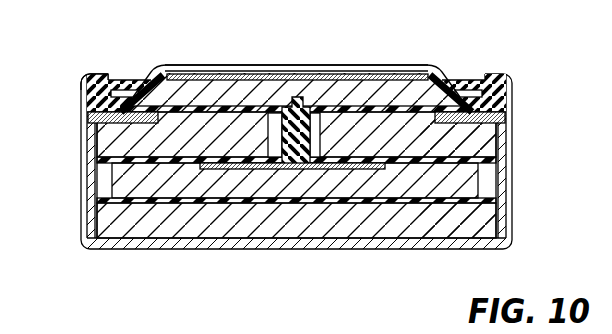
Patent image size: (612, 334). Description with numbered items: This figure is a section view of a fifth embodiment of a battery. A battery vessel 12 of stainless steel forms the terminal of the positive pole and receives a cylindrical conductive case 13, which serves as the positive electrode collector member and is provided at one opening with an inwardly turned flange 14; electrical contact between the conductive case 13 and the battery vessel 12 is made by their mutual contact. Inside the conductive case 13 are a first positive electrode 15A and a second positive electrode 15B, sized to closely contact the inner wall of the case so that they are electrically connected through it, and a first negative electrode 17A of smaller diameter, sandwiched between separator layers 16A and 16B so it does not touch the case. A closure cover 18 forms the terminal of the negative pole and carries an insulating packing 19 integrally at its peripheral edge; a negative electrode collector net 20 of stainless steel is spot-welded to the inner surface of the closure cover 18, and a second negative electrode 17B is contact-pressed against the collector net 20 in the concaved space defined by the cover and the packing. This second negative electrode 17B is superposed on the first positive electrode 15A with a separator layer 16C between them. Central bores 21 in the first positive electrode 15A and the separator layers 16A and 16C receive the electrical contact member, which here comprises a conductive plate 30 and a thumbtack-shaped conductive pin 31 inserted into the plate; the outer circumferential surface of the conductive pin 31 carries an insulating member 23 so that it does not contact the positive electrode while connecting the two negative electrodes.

The battery vessel 12 is at (152, 249).
The conductive case 13 is at (90, 118).
The inwardly turned flange 14 is at (460, 80).
The first positive electrode 15A is at (485, 140).
The second positive electrode 15B is at (477, 230).
The separator layer 16A is at (100, 160).
The separator layer 16B is at (103, 198).
The separator layer 16C is at (143, 82).
The first negative electrode 17A is at (472, 183).
The second negative electrode 17B is at (173, 87).
The closure cover 18 is at (412, 72).
The insulating packing 19 is at (88, 78).
The negative electrode collector net 20 is at (350, 80).
The central bores 21 is at (273, 128).
The insulating member 23 is at (316, 128).
The conductive plate 30 is at (255, 165).
The conductive pin 31 is at (297, 110).